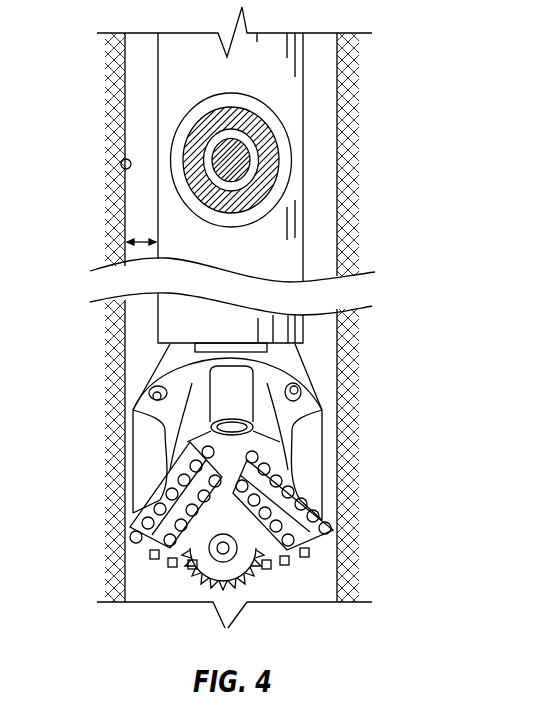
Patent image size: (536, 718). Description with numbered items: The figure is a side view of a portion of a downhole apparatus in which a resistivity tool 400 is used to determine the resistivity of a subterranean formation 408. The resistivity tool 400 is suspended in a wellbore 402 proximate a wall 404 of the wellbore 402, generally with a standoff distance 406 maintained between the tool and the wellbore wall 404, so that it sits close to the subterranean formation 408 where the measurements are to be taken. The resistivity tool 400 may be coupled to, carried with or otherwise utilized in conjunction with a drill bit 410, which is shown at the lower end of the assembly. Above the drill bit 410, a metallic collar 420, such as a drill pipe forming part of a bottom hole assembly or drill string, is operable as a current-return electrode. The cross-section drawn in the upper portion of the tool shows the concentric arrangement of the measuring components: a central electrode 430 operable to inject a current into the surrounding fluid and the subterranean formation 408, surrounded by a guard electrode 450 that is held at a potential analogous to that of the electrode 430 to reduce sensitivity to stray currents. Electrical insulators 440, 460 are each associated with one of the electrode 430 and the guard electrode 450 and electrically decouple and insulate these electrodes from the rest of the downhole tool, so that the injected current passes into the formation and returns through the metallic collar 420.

The resistivity tool 400 is at (158, 127).
The wellbore 402 is at (124, 86).
The wall of the wellbore 404 is at (121, 163).
The standoff distance 406 is at (140, 238).
The subterranean formation 408 is at (363, 387).
The drill bit 410 is at (312, 460).
The metallic collar 420 is at (163, 320).
The electrode 430 is at (235, 191).
The electrical insulator 440 is at (219, 127).
The guard electrode 450 is at (268, 110).
The electrical insulator 460 is at (290, 164).